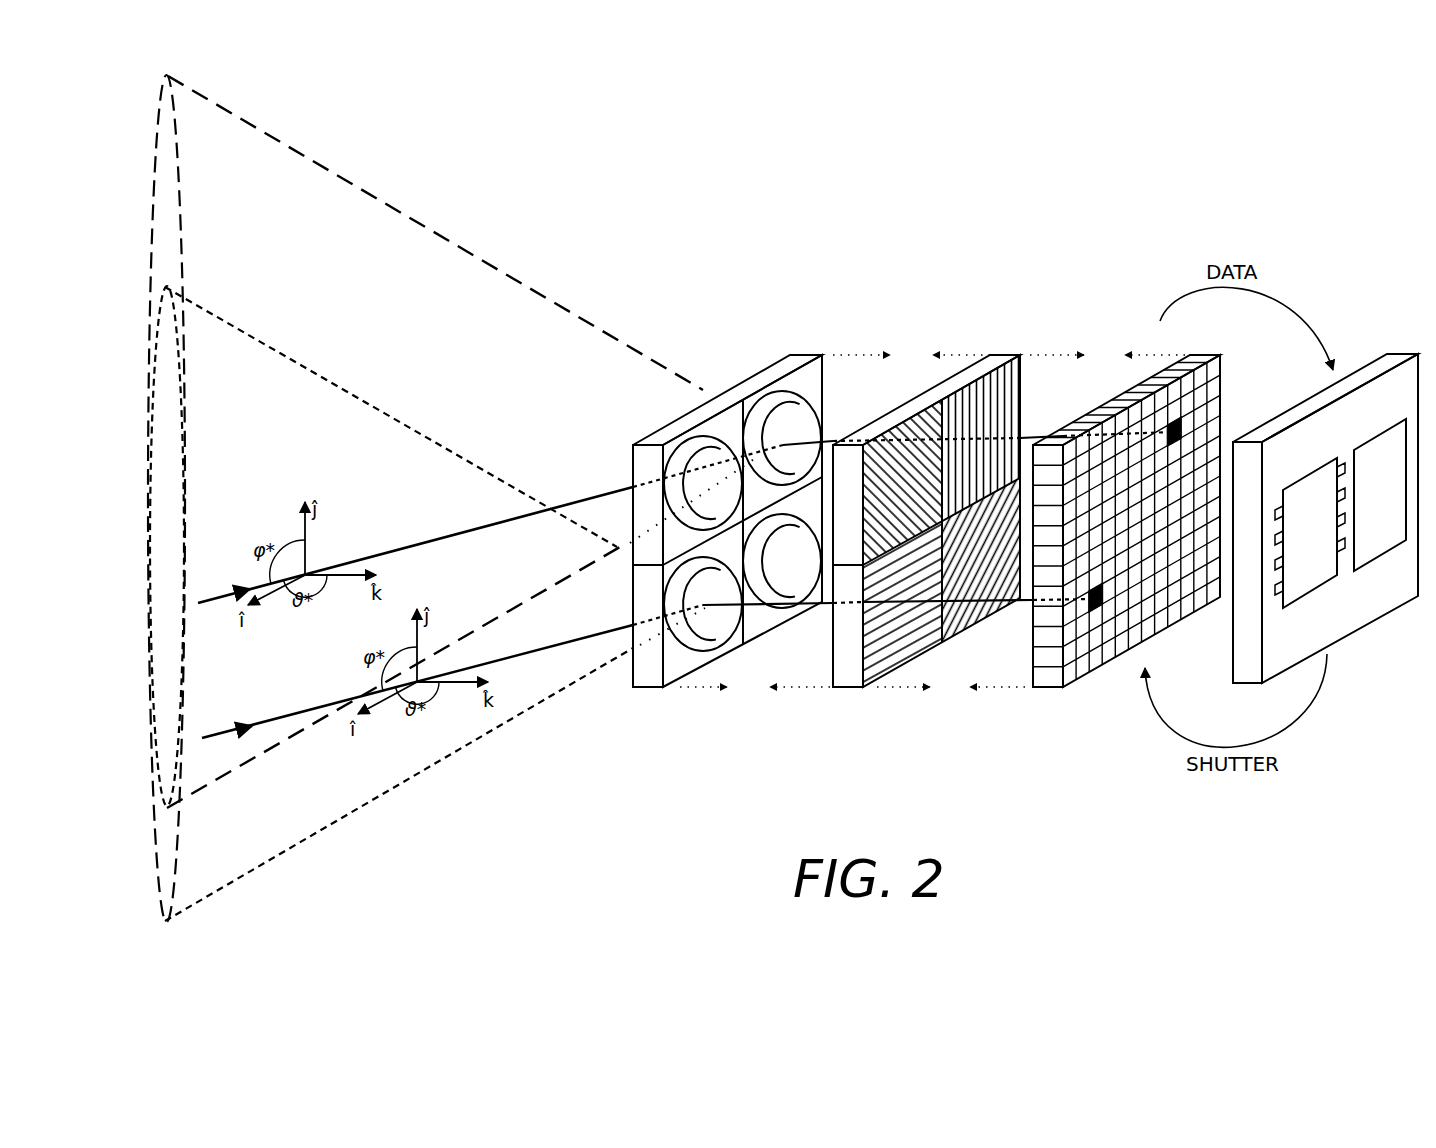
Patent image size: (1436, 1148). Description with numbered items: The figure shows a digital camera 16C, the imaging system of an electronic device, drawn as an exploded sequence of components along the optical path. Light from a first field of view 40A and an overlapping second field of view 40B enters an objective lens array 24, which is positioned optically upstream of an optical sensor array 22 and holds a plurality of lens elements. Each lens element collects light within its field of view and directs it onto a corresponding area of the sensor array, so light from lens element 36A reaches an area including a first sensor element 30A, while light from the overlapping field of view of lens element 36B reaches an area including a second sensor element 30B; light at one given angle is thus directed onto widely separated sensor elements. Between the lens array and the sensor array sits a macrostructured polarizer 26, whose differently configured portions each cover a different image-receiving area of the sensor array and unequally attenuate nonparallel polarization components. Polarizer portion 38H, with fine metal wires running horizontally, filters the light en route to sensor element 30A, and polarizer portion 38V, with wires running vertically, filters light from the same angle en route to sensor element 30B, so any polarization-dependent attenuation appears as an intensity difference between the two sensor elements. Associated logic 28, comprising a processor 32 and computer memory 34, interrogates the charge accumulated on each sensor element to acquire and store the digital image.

The digital camera 16C is at (538, 228).
The optical sensor array 22 is at (1158, 550).
The objective lens array 24 is at (727, 494).
The macrostructured polarizer 26 is at (930, 492).
The logic 28 is at (1325, 518).
The first sensor element 30A is at (1097, 610).
The second sensor element 30B is at (1183, 428).
The processor 32 is at (1323, 545).
The computer memory 34 is at (1395, 503).
The lens element 36A is at (730, 600).
The lens element 36B is at (818, 436).
The polarizer portion 38H is at (834, 662).
The polarizer portion 38V is at (1021, 384).
The first field of view 40A is at (250, 842).
The second field of view 40B is at (250, 194).